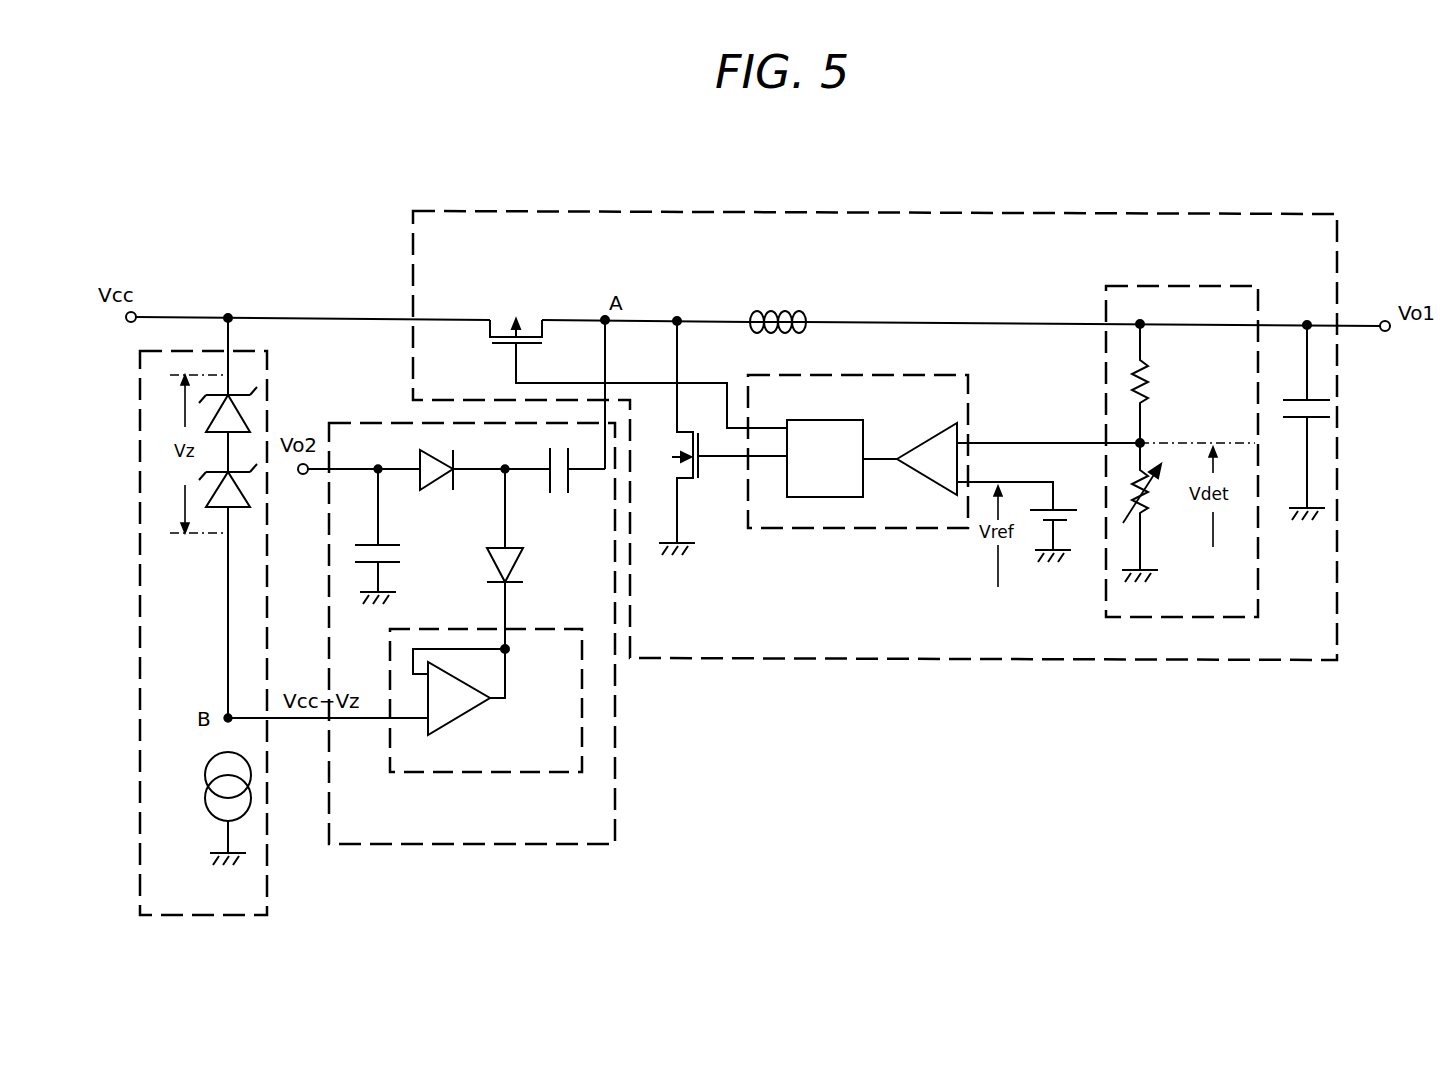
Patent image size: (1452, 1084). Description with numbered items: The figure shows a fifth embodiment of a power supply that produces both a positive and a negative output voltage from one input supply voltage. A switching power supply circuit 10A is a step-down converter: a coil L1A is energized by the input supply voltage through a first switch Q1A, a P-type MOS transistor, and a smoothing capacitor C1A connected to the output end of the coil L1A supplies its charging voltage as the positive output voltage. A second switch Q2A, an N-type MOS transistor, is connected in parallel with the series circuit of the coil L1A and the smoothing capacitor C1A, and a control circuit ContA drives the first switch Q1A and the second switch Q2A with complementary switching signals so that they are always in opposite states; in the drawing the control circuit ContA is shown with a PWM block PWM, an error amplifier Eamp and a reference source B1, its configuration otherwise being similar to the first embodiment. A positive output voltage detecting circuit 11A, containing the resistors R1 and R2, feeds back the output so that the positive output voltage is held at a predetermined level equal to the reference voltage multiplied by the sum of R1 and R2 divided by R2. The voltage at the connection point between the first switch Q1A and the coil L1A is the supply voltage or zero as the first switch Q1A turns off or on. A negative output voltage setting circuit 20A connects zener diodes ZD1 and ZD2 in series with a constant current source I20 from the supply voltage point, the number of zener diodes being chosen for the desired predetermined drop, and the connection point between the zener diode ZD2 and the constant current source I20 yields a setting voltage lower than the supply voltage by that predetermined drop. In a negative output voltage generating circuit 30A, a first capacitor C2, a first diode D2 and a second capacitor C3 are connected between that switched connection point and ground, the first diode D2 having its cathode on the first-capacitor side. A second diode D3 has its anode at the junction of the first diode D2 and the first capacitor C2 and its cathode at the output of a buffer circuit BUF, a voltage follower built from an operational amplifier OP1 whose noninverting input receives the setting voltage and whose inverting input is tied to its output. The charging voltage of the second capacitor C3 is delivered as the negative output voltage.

The switching power supply circuit 10A is at (822, 212).
The positive output voltage detecting circuit 11A is at (1198, 286).
The negative output voltage setting circuit 20A is at (265, 856).
The negative output voltage generating circuit 30A is at (613, 797).
The first switch Q1A is at (637, 354).
The second switch Q2A is at (723, 438).
The coil L1A is at (778, 307).
The smoothing capacitor C1A is at (1295, 422).
The control circuit ContA is at (913, 374).
The PWM control circuit PWM is at (813, 419).
The error amplifier Eamp is at (926, 442).
The resistor R1 is at (1155, 385).
The resistor R2 is at (1149, 512).
The reference voltage source B1 is at (1038, 532).
The zener diode ZD1 is at (252, 421).
The zener diode ZD2 is at (242, 487).
The constant current source I20 is at (203, 800).
The first diode D2 is at (485, 487).
The second diode D3 is at (526, 559).
The first capacitor C2 is at (566, 422).
The second capacitor C3 is at (393, 536).
The operational amplifier OP1 is at (468, 713).
The buffer circuit BUF is at (491, 772).